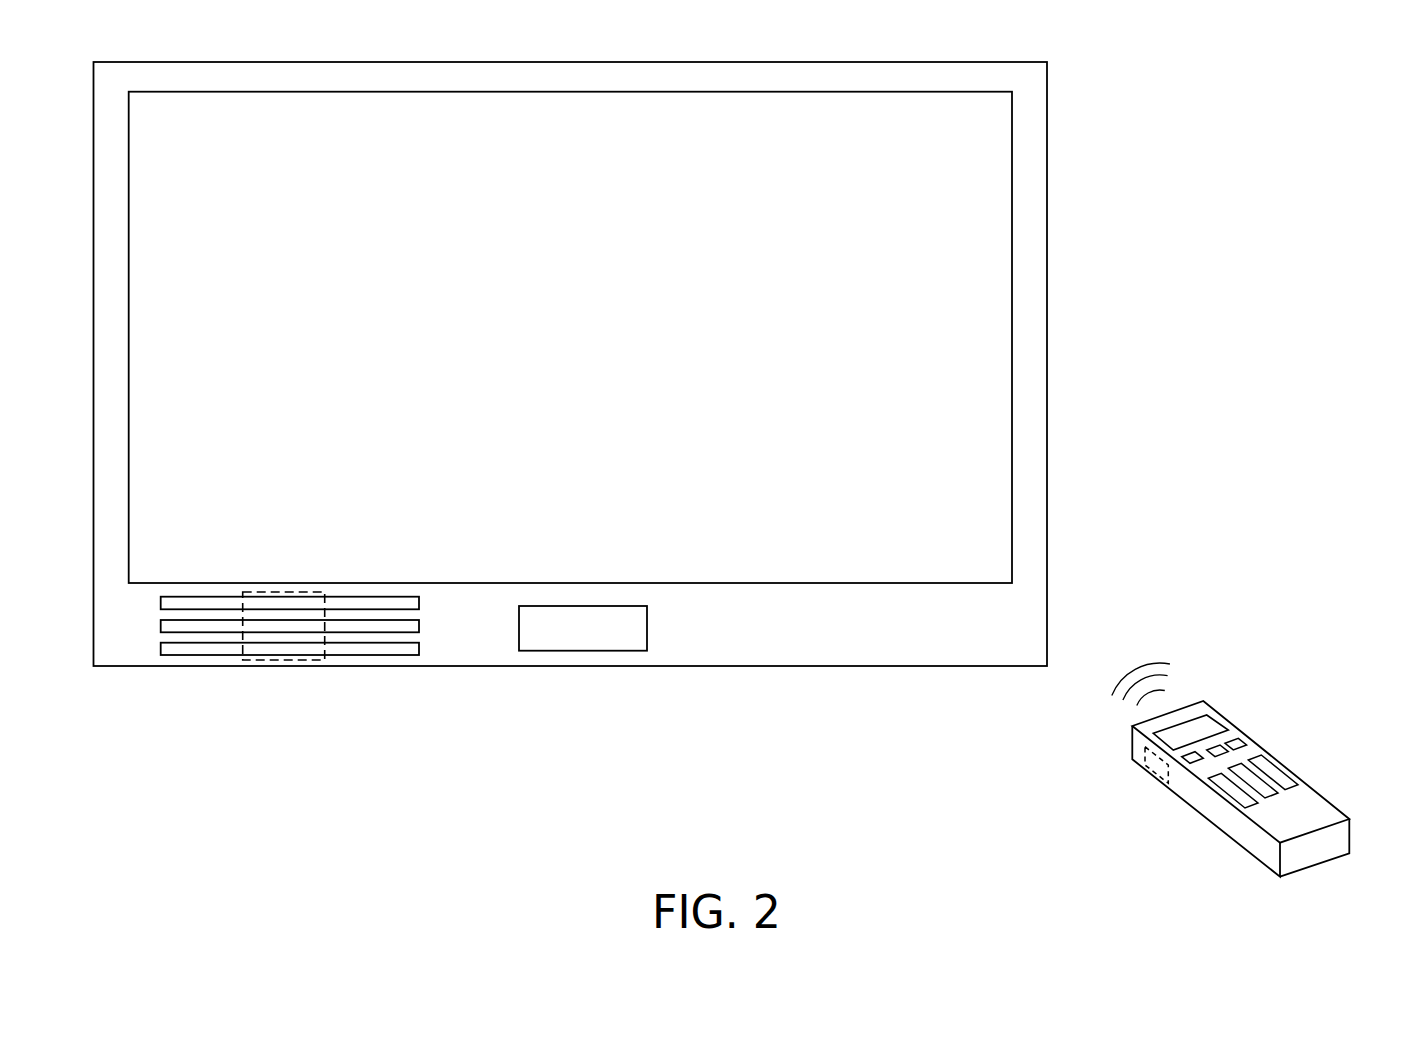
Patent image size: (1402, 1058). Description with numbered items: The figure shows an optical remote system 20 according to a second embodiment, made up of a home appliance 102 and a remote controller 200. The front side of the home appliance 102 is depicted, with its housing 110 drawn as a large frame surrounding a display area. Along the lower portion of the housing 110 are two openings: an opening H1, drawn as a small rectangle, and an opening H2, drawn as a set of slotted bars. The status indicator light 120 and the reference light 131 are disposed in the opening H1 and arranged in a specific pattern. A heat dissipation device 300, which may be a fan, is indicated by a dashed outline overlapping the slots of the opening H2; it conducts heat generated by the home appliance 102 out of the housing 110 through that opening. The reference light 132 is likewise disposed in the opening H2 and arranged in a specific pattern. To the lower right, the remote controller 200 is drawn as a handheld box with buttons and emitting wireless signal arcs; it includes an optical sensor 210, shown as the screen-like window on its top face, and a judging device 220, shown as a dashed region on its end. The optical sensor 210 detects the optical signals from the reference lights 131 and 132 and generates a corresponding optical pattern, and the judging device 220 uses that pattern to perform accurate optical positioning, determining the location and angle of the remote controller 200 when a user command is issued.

The optical remote system 20 is at (1263, 105).
The housing 110 is at (1047, 134).
The home appliance 102 is at (1021, 655).
The opening H1 is at (688, 628).
The status indicator light 120 is at (583, 628).
The reference light 131 is at (647, 633).
The opening H2 is at (274, 666).
The reference light 132 is at (192, 650).
The heat dissipation device 300 is at (300, 662).
The remote controller 200 is at (1318, 790).
The optical sensor 210 is at (1213, 726).
The judging device 220 is at (1150, 777).